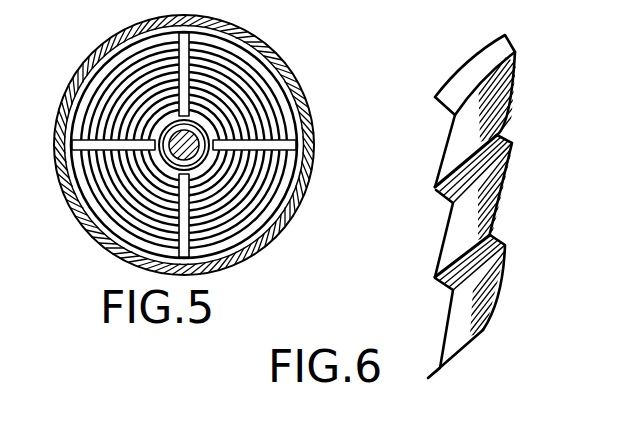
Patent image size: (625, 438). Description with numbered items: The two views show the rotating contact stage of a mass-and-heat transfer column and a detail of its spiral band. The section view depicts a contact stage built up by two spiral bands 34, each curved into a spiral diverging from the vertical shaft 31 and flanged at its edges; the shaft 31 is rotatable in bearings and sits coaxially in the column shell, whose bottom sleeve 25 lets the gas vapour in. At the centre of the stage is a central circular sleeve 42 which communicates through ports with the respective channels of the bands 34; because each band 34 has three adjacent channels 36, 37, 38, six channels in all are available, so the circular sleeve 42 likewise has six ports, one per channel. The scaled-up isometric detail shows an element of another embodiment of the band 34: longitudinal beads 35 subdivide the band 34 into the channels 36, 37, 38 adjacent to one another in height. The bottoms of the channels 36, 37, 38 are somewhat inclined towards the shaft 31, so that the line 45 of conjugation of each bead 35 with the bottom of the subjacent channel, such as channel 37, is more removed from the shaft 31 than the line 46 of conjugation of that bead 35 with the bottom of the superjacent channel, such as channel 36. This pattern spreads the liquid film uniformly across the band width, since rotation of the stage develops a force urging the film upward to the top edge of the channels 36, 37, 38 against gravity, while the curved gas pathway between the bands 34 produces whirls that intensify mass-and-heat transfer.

In FIG. 5, the bottom sleeve 25 is at (62, 8).
In FIG. 5, the vertical shaft 31 is at (199, 140).
In FIG. 5, the band 34 is at (131, 209).
In FIG. 6, the band 34 is at (513, 98).
In FIG. 6, the longitudinal bead 35 is at (436, 191).
In FIG. 6, the channel 36 is at (450, 128).
In FIG. 6, the channel 37 is at (444, 243).
In FIG. 6, the channel 38 is at (446, 325).
In FIG. 5, the central circular sleeve 42 is at (207, 118).
In FIG. 6, the line of conjugation 45 is at (456, 194).
In FIG. 6, the line of conjugation 46 is at (462, 166).